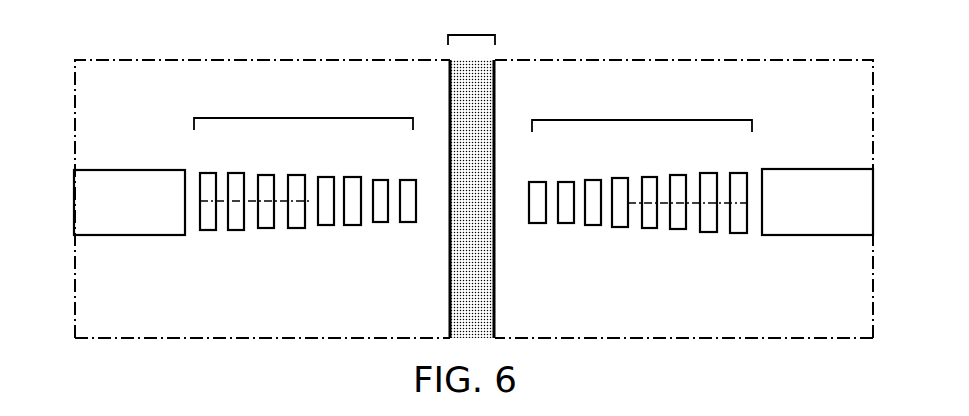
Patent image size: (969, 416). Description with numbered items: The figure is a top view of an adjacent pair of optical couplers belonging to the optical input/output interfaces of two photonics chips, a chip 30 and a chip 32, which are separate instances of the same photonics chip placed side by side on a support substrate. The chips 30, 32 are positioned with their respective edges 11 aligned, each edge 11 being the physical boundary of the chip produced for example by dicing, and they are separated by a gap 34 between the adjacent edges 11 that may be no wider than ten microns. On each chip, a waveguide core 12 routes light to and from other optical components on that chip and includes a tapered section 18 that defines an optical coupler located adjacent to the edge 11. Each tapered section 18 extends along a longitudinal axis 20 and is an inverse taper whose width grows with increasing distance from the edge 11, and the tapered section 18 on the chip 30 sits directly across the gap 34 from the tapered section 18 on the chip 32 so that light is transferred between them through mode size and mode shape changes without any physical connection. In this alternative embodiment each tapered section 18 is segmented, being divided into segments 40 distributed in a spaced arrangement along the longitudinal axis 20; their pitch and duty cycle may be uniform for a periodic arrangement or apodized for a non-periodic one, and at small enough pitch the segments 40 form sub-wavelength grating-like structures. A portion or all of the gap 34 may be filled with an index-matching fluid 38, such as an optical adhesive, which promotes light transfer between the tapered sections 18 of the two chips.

The edge 11 is at (450, 315).
The waveguide core 12 is at (122, 186).
The tapered section 18 is at (303, 118).
The longitudinal axis 20 is at (221, 201).
The chip 30 is at (127, 104).
The chip 32 is at (852, 107).
The gap 34 is at (471, 35).
The index-matching fluid 38 is at (478, 160).
The segments 40 is at (299, 209).